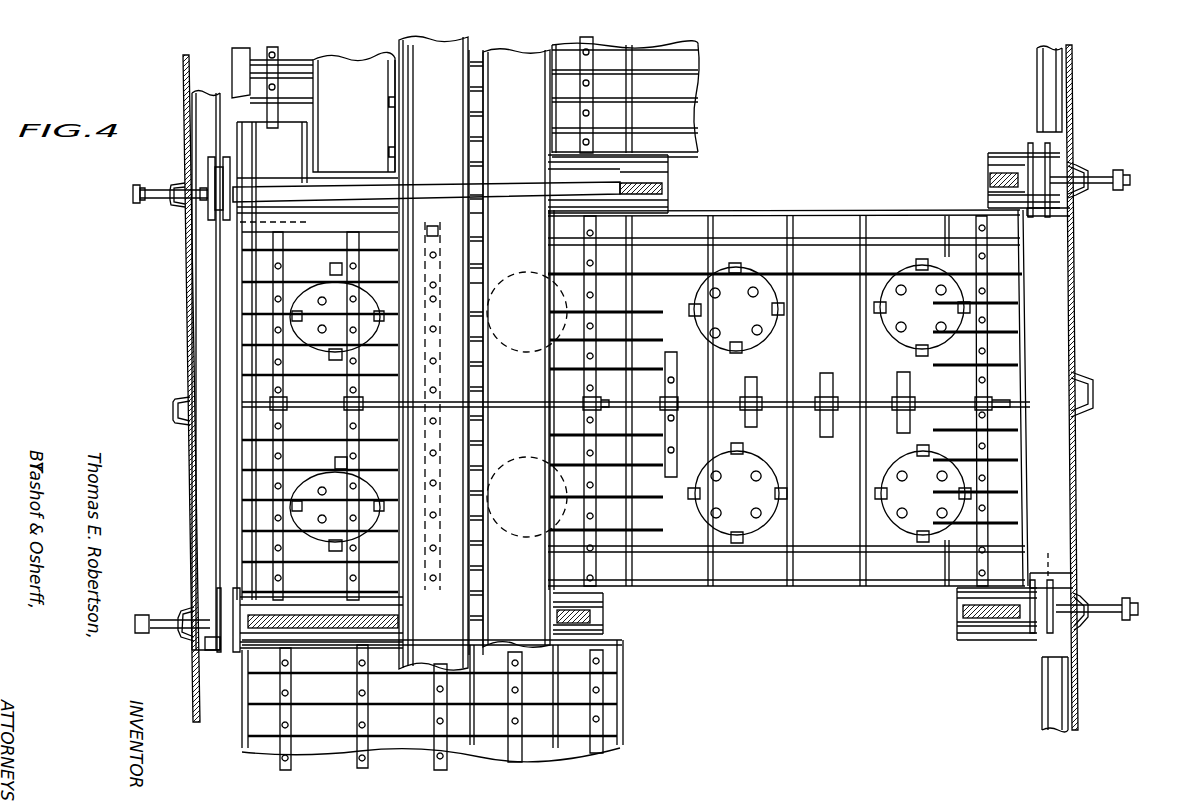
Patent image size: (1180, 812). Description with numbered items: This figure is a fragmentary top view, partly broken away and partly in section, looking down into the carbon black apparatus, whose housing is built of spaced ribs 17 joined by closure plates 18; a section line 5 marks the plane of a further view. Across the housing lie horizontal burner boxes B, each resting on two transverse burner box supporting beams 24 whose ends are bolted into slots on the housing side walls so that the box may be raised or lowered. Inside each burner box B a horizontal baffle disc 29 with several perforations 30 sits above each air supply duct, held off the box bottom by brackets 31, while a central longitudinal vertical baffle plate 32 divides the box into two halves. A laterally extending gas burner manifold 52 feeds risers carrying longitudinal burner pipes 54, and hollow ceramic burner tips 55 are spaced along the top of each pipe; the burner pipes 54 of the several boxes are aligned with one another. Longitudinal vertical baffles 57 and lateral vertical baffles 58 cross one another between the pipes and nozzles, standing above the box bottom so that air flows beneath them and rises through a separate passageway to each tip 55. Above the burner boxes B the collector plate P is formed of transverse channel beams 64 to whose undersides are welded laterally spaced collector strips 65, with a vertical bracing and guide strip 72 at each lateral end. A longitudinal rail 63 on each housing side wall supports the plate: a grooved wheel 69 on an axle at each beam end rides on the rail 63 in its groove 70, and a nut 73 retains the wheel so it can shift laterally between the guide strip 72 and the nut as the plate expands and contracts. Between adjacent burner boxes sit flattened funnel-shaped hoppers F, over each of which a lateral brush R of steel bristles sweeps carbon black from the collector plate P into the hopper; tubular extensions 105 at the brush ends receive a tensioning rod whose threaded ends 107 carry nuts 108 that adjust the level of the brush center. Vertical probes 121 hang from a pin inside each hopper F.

The shaft / section line 5 is at (57, 178).
The ribs 17 is at (174, 409).
The closure plates 18 is at (187, 314).
The burner box supporting beams 24 is at (1072, 221).
The baffle disc 29 is at (342, 270).
The perforations 30 is at (755, 322).
The brackets 31 is at (744, 348).
The vertical baffle plate 32 is at (633, 238).
The gas burner manifold 52 is at (367, 410).
The burner pipe 54 is at (359, 373).
The burner tips 55 is at (276, 361).
The longitudinally extending vertical baffles 57 is at (738, 214).
The laterally extending vertical baffles 58 is at (875, 240).
The rail 63 is at (216, 523).
The channel beams 64 is at (497, 189).
The collector strips 65 is at (503, 66).
The grooved wheel 69 is at (210, 215).
The groove 70 is at (224, 175).
The bracing and guide strip 72 is at (240, 48).
The nut 73 is at (214, 186).
The tubular extension 105 is at (176, 198).
The threaded ends 107 is at (133, 190).
The nut 108 is at (143, 195).
The vertical probes 121 is at (401, 628).
The burner boxes B is at (829, 204).
The collector plate P is at (366, 78).
The brushes R is at (330, 612).
The hoppers F is at (229, 680).